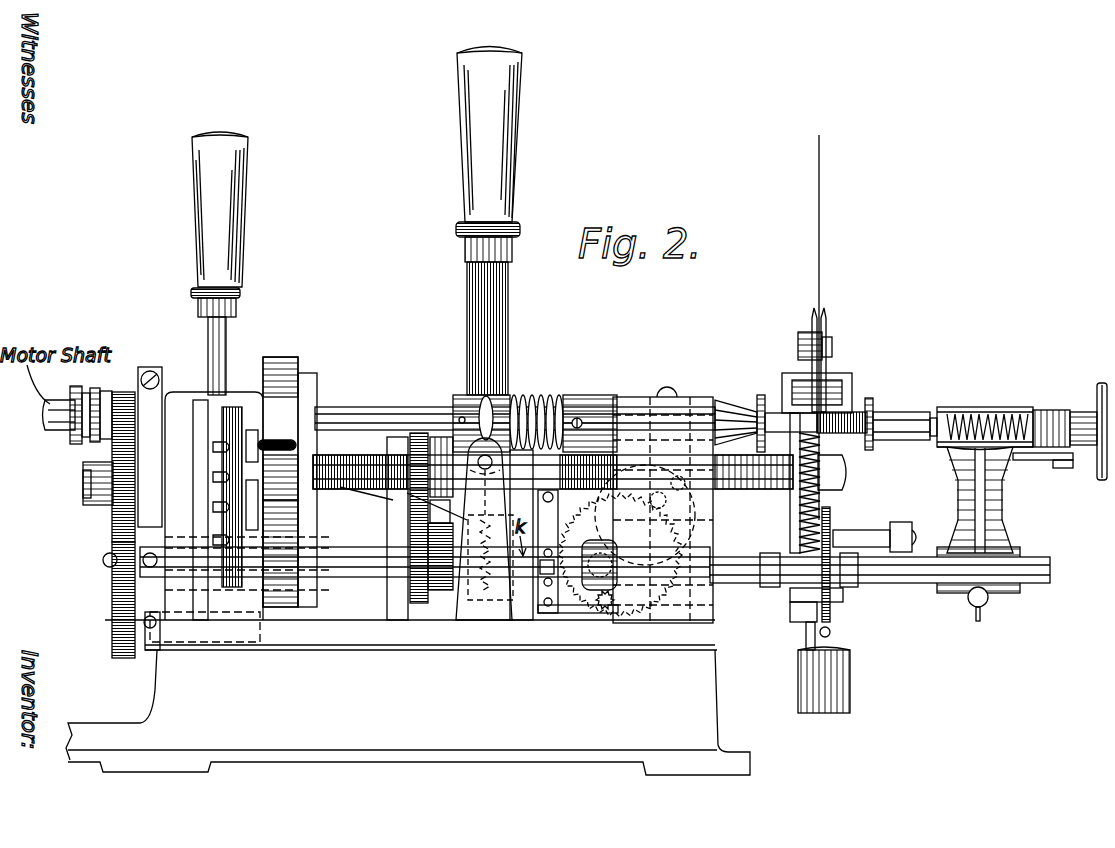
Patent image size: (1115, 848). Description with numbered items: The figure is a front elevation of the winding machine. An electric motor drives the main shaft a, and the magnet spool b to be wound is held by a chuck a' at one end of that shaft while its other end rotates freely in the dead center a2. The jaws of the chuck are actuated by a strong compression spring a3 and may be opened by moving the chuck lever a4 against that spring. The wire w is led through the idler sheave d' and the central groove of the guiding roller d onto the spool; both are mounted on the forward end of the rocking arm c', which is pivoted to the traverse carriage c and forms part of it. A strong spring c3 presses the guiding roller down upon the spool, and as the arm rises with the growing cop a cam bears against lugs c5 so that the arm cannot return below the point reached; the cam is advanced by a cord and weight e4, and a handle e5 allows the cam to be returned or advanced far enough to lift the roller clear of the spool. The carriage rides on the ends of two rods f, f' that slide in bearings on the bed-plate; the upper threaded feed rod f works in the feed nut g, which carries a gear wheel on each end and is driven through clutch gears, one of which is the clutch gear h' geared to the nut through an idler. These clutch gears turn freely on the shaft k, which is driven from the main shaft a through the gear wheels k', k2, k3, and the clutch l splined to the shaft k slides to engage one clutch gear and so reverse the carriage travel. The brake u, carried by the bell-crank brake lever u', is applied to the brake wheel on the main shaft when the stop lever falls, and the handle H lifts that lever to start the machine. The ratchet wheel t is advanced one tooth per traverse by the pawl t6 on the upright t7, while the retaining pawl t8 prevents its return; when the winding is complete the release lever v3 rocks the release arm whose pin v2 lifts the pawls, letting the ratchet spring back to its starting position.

The handle H is at (240, 216).
The main shaft a is at (515, 402).
The chuck a' is at (766, 404).
The dead center a2 is at (883, 417).
The compression spring a3 is at (513, 440).
The chuck lever a4 is at (497, 357).
The magnet spool b is at (877, 415).
The traverse carriage c is at (840, 483).
The rocking arm c' is at (829, 389).
The spring c3 is at (822, 498).
The lugs c5 is at (800, 608).
The guiding roller d is at (834, 352).
The idler sheave d' is at (836, 357).
The weight e4 is at (843, 686).
The handle e5 is at (903, 530).
The threaded feed rod f is at (553, 476).
The rod f' is at (880, 551).
The feed nut g is at (447, 462).
The clutch gear h' is at (424, 537).
The shaft k is at (425, 548).
The gear wheel k' is at (128, 439).
The gear wheel k2 is at (112, 526).
The gear wheel k3 is at (112, 622).
The clutch l is at (443, 587).
The ratchet wheel t is at (626, 541).
The pawl t6 is at (615, 610).
The upright t7 is at (548, 567).
The retaining pawl t8 is at (642, 398).
The brake u is at (287, 482).
The bell-crank brake lever u' is at (295, 553).
The pin v2 is at (568, 613).
The release lever v3 is at (590, 552).
The wire w is at (821, 178).